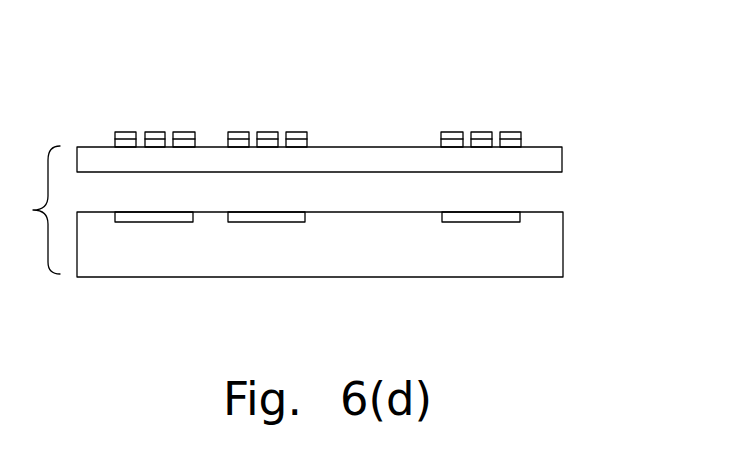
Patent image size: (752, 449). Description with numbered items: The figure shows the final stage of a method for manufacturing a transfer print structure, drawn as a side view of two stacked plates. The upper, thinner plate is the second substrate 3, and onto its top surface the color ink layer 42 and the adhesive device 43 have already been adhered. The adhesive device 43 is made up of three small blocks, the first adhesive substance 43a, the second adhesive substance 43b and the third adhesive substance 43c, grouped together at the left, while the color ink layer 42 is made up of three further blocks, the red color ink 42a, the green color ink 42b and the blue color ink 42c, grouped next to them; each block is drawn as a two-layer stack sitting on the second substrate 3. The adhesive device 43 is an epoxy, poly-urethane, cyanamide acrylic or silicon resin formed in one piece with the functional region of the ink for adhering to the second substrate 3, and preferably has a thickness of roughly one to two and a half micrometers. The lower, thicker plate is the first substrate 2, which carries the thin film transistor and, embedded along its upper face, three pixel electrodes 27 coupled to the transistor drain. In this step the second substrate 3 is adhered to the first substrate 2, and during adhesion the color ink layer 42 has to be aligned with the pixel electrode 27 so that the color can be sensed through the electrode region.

The first substrate 2 is at (563, 255).
The second substrate 3 is at (562, 160).
The pixel electrode 27 is at (150, 222).
The color ink layer 42 is at (296, 84).
The red color ink 42a is at (240, 132).
The green color ink 42b is at (268, 132).
The blue color ink 42c is at (325, 110).
The adhesive device 43 is at (147, 84).
The first adhesive substance 43a is at (116, 145).
The second adhesive substance 43b is at (146, 145).
The third adhesive substance 43c is at (191, 110).